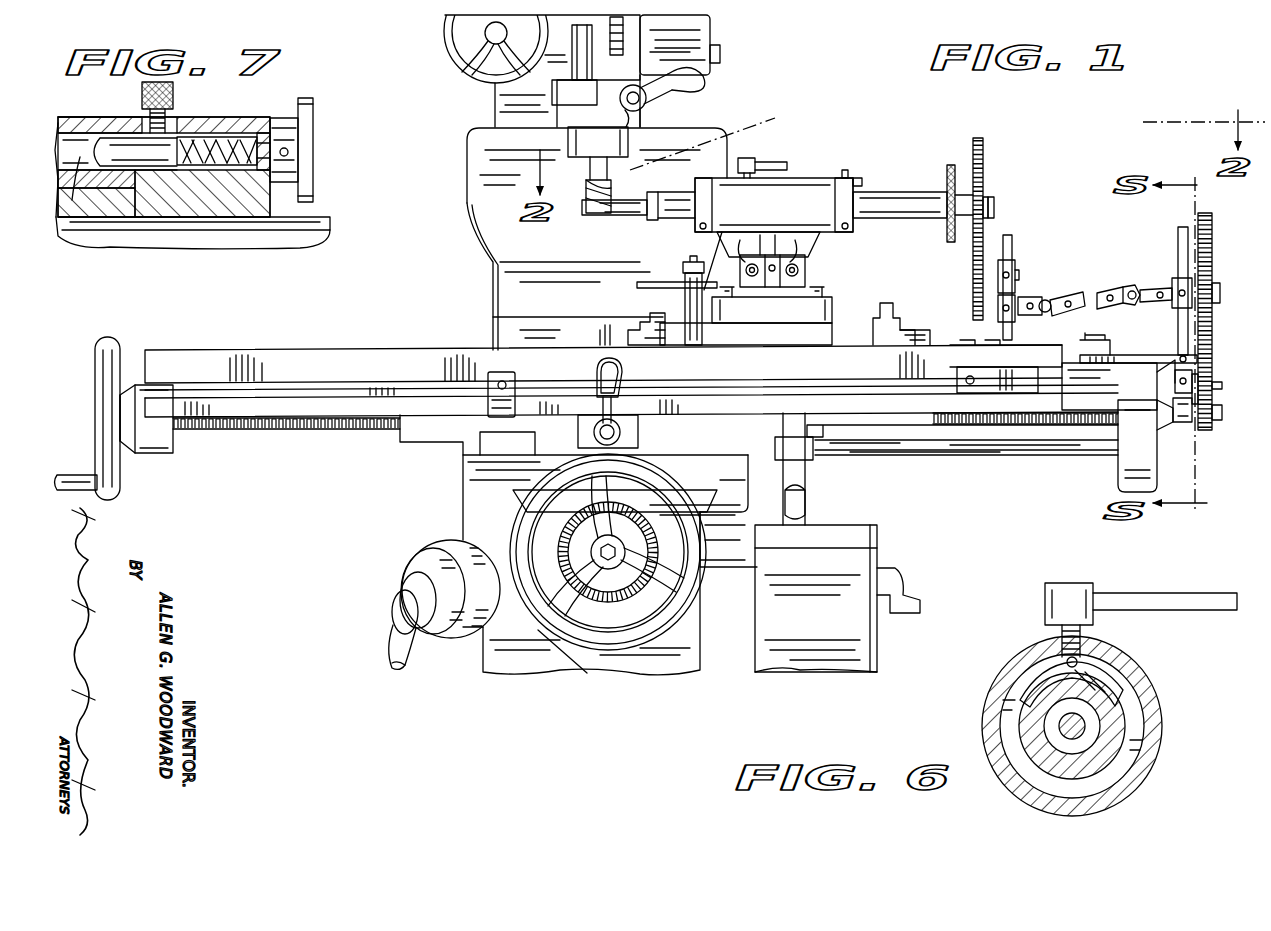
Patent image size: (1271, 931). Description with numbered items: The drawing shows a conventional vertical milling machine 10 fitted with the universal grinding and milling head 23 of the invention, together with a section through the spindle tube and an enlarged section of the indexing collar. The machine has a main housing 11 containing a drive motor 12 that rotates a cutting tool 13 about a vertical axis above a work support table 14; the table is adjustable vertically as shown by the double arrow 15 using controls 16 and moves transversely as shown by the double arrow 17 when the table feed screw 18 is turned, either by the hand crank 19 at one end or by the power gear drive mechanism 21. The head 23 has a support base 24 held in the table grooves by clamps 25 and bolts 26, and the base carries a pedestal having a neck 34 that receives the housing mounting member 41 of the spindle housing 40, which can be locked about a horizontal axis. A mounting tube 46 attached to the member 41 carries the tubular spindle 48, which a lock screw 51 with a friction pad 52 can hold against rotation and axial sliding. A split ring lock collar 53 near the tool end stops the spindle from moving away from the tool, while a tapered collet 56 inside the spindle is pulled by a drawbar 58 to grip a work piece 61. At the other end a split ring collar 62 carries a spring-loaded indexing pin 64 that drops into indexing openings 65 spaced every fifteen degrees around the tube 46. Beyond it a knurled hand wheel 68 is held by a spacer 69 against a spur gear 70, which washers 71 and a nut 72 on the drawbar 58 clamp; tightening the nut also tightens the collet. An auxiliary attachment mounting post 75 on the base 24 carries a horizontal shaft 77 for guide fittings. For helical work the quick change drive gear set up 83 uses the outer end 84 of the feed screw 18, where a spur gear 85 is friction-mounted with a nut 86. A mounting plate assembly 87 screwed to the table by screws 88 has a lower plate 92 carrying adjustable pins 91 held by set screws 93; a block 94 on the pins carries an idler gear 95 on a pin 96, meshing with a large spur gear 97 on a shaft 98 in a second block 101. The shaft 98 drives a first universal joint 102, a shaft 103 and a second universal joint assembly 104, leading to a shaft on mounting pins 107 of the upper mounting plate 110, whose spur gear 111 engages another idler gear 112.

In FIG. 1, the vertical milling machine 10 is at (718, 105).
In FIG. 1, the main housing 11 is at (505, 273).
In FIG. 1, the drive motor 12 is at (712, 35).
In FIG. 1, the cutting tool 13 is at (573, 183).
In FIG. 1, the work support table 14 is at (415, 355).
In FIG. 1, the double arrow 15 is at (413, 460).
In FIG. 1, the controls 16 is at (628, 630).
In FIG. 1, the double arrow 17 is at (328, 368).
In FIG. 1, the table feed screw 18 is at (280, 430).
In FIG. 1, the hand crank 19 is at (120, 350).
In FIG. 1, the gear drive mechanism 21 is at (843, 520).
In FIG. 1, the universal head 23 is at (860, 172).
In FIG. 1, the support base 24 is at (820, 323).
In FIG. 1, the clamps 25 is at (632, 328).
In FIG. 1, the bolts 26 is at (667, 315).
In FIG. 1, the neck 34 is at (805, 282).
In FIG. 1, the spindle housing 40 is at (806, 172).
In FIG. 1, the housing mounting member 41 is at (822, 237).
In FIG. 7, the mounting tube 46 is at (98, 120).
In FIG. 1, the mounting tube 46 is at (822, 180).
In FIG. 6, the mounting tube 46 is at (1148, 677).
In FIG. 7, the tubular spindle 48 is at (307, 225).
In FIG. 1, the tubular spindle 48 is at (917, 190).
In FIG. 6, the tubular spindle 48 is at (1063, 762).
In FIG. 1, the lock screw 51 is at (748, 158).
In FIG. 6, the lock screw 51 is at (1057, 603).
In FIG. 6, the friction pad 52 is at (1032, 687).
In FIG. 1, the split ring lock collar 53 is at (702, 190).
In FIG. 1, the collet 56 is at (647, 222).
In FIG. 6, the drawbar 58 is at (1087, 727).
In FIG. 1, the work piece 61 is at (647, 193).
In FIG. 7, the split ring collar 62 is at (218, 118).
In FIG. 1, the split ring collar 62 is at (835, 205).
In FIG. 7, the indexing pin 64 is at (293, 130).
In FIG. 1, the indexing pin 64 is at (856, 183).
In FIG. 7, the indexing openings 65 is at (80, 157).
In FIG. 1, the knurled hand wheel 68 is at (951, 165).
In FIG. 1, the spacer 69 is at (967, 210).
In FIG. 1, the spur gear 70 is at (982, 140).
In FIG. 1, the washers 71 is at (990, 197).
In FIG. 1, the nut 72 is at (995, 200).
In FIG. 1, the auxiliary attachment mounting post 75 is at (720, 326).
In FIG. 1, the shaft 77 is at (650, 278).
In FIG. 1, the quick change drive gear set up 83 is at (1063, 275).
In FIG. 1, the outer end of table feed screw 84 is at (1188, 420).
In FIG. 1, the spur gear 85 is at (1213, 422).
In FIG. 1, the nut 86 is at (1220, 418).
In FIG. 1, the mounting plate assembly 87 is at (1117, 353).
In FIG. 1, the screws 88 is at (1097, 322).
In FIG. 1, the pins 91 is at (1180, 240).
In FIG. 1, the lower plate 92 is at (1103, 370).
In FIG. 1, the set screws 93 is at (1173, 360).
In FIG. 1, the block 94 is at (1210, 358).
In FIG. 1, the idler gear 95 is at (1197, 372).
In FIG. 1, the pin 96 is at (1222, 385).
In FIG. 1, the large spur gear 97 is at (1213, 250).
In FIG. 1, the shaft 98 is at (1213, 312).
In FIG. 1, the second block 101 is at (1178, 275).
In FIG. 1, the first universal joint 102 is at (1113, 287).
In FIG. 1, the shaft 103 is at (1083, 290).
In FIG. 1, the second universal joint assembly 104 is at (1040, 298).
In FIG. 1, the mounting pins 107 is at (1012, 242).
In FIG. 1, the upper mounting plate 110 is at (960, 342).
In FIG. 1, the spur gear 111 is at (987, 345).
In FIG. 1, the idler gear 112 is at (973, 283).